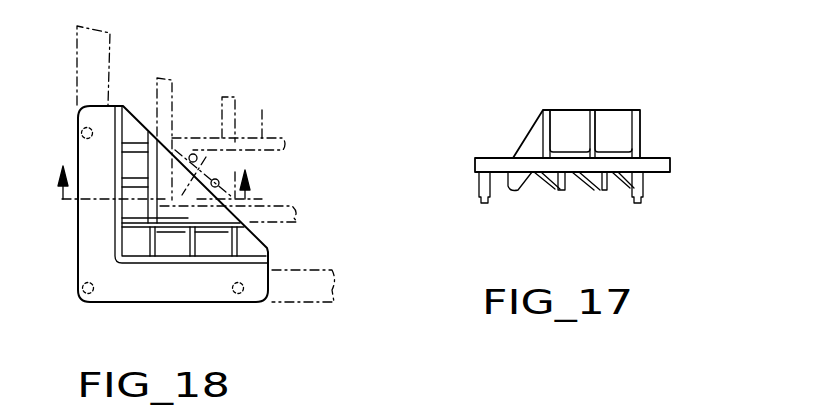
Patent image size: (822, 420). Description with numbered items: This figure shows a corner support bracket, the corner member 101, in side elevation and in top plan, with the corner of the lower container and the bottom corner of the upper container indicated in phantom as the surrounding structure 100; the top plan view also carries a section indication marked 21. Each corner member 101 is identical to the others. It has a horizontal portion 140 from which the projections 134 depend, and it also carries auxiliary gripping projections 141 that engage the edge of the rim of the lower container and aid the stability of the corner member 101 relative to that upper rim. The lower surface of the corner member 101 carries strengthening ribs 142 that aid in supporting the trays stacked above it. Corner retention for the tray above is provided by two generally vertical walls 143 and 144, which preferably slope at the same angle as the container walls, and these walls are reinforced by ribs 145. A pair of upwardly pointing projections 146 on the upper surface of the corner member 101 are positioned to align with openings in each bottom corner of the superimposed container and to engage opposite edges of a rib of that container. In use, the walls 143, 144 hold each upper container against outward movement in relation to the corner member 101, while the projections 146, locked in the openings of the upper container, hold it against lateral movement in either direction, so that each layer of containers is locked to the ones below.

In FIG. 18, the frame rail (phantom) 100 is at (284, 137).
In FIG. 18, the corner member 101 is at (273, 244).
In FIG. 17, the corner member 101 is at (540, 100).
In FIG. 18, the projections 134 is at (80, 132).
In FIG. 17, the projections 134 is at (482, 190).
In FIG. 18, the horizontal portion 140 is at (188, 288).
In FIG. 17, the horizontal portion 140 is at (477, 167).
In FIG. 17, the auxiliary gripping projections 141 is at (510, 190).
In FIG. 17, the strengthening ribs 142 is at (537, 187).
In FIG. 18, the vertical wall 143 is at (193, 215).
In FIG. 17, the vertical wall 143 is at (643, 132).
In FIG. 18, the vertical wall 144 is at (150, 209).
In FIG. 17, the vertical wall 144 is at (618, 118).
In FIG. 18, the ribs 145 is at (148, 224).
In FIG. 17, the ribs 145 is at (590, 115).
In FIG. 18, the projections 146 is at (191, 152).
In FIG. 18, the section line 21- 21 is at (144, 182).